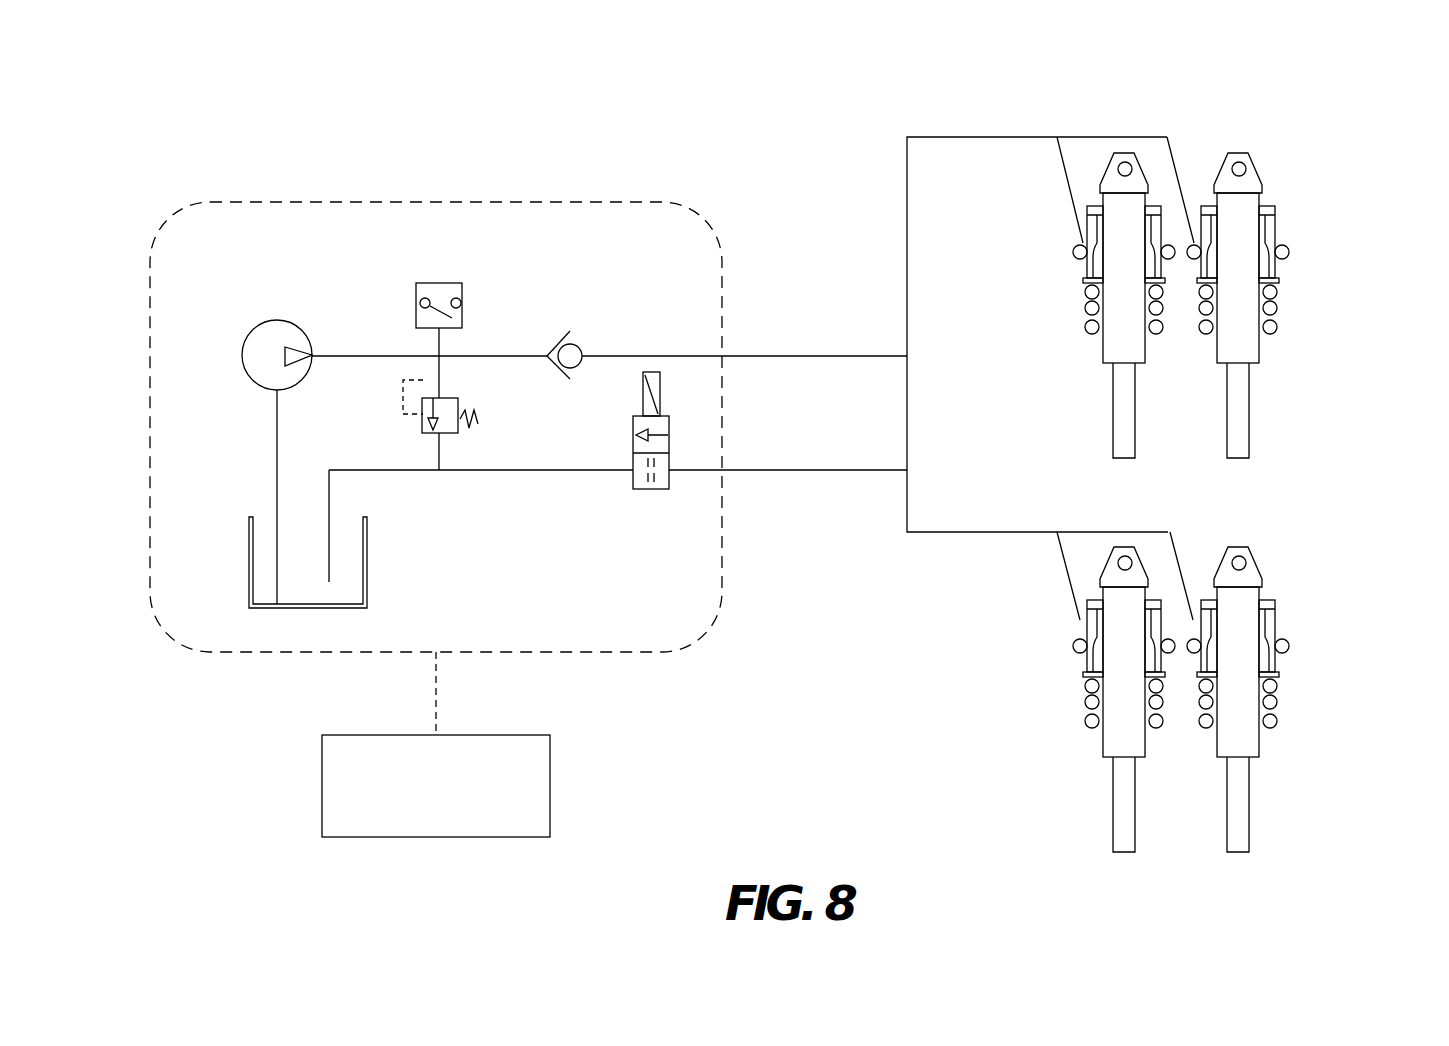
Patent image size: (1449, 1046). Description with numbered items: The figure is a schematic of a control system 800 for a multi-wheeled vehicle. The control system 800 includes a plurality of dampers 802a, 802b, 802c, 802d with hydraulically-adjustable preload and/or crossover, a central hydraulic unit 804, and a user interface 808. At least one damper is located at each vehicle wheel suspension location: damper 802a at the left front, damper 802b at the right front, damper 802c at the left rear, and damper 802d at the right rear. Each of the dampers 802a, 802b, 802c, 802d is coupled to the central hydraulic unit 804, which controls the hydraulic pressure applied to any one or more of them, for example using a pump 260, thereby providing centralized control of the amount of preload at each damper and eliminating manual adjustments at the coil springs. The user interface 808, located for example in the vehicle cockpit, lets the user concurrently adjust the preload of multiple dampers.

The control system 800 is at (1010, 44).
The central hydraulic unit 804 is at (412, 451).
The pump 260 is at (242, 354).
The user interface 808 is at (322, 785).
The damper 802a is at (1103, 341).
The damper 802b is at (1259, 341).
The damper 802c is at (1103, 736).
The damper 802d is at (1259, 736).